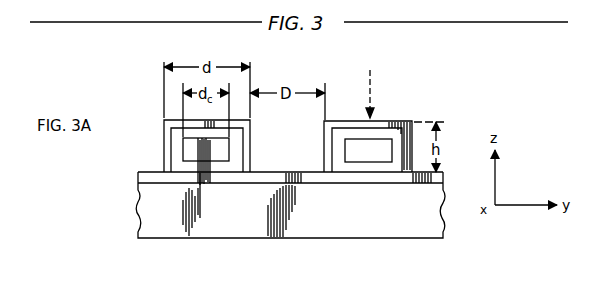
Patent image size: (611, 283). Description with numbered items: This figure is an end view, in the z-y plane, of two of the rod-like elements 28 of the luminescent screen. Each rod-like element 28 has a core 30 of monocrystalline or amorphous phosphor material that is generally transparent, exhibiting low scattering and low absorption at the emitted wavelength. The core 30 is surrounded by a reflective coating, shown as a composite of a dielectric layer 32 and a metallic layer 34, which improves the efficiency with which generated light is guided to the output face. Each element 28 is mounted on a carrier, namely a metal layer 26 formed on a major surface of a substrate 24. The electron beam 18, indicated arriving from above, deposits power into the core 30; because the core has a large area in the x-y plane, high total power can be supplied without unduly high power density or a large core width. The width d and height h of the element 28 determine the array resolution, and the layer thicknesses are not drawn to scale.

The electron beam 18 is at (372, 72).
The substrate 24 is at (160, 220).
The metal layer 26 is at (152, 181).
The rod-like element 28 is at (396, 122).
The core 30 is at (222, 148).
The dielectric layer 32 is at (178, 157).
The metallic layer 34 is at (165, 128).